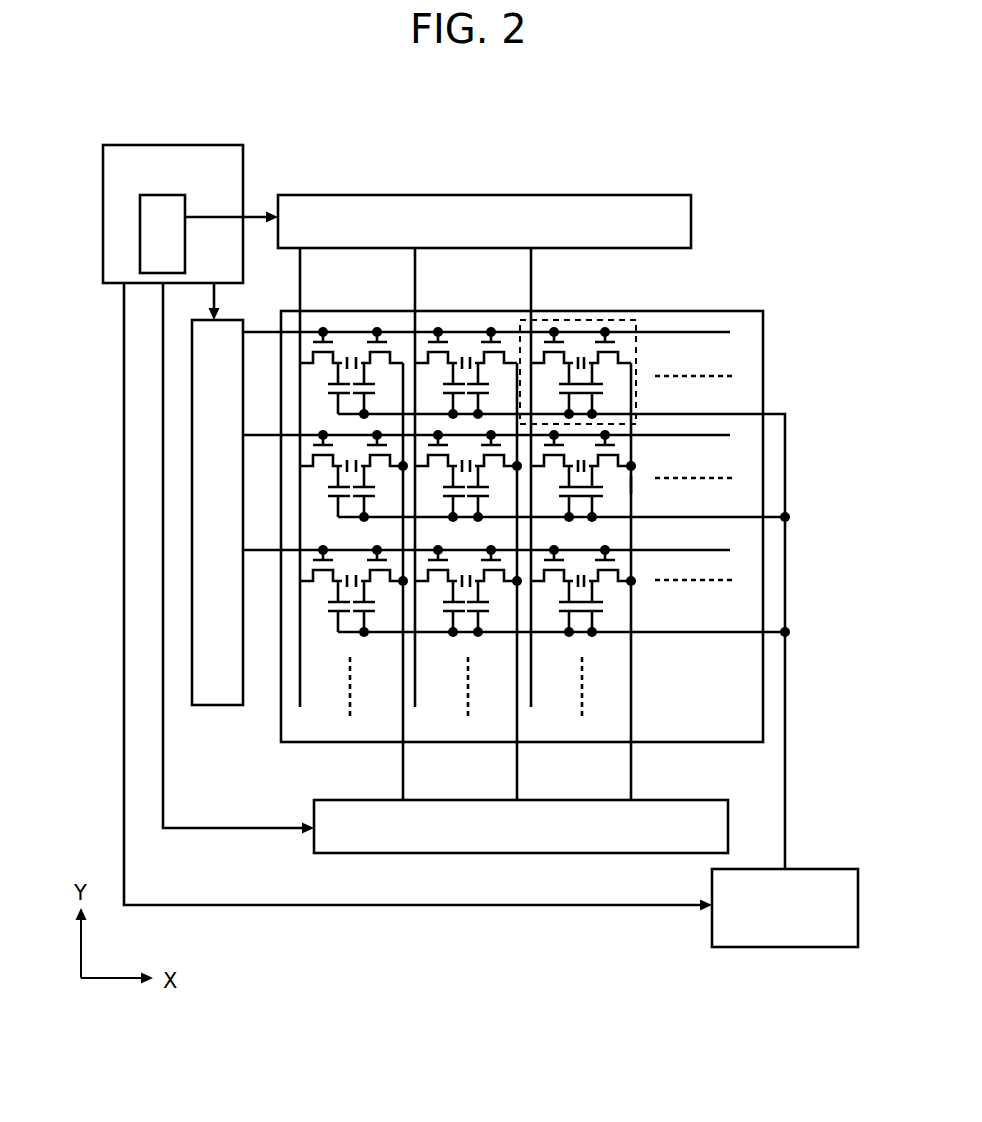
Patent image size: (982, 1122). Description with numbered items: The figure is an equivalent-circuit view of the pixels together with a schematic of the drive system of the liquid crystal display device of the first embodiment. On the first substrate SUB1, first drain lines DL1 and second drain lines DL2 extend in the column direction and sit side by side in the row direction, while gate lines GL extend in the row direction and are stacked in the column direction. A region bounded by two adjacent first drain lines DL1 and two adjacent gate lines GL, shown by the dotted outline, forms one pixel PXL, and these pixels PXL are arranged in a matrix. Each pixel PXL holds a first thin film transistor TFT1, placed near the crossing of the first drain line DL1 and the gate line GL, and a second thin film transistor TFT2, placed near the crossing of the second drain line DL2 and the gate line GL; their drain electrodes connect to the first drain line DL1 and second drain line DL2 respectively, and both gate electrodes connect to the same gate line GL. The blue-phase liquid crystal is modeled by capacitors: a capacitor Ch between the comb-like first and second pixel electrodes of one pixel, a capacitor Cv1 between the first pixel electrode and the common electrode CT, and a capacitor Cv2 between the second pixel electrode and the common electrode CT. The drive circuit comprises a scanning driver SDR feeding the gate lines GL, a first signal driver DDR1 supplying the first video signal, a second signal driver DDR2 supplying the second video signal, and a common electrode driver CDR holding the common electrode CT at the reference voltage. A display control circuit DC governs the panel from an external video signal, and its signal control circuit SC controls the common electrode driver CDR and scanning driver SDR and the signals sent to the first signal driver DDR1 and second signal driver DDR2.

The display control circuit DC is at (240, 163).
The signal control circuit SC is at (163, 196).
The first signal driver DDR1 is at (692, 221).
The scanning driver SDR is at (216, 697).
The second signal driver DDR2 is at (500, 856).
The common electrode driver CDR is at (712, 933).
The first substrate SUB1 is at (763, 331).
The gate line GL is at (720, 330).
The first drain line DL1 is at (533, 289).
The second drain line DL2 is at (633, 781).
The common electrode CT is at (672, 633).
The first thin film transistor TFT1 is at (568, 345).
The second thin film transistor TFT2 is at (620, 354).
The pixel PXL is at (637, 386).
The capacitor Cv1 is at (556, 476).
The capacitor Cv2 is at (608, 476).
The capacitor Ch is at (621, 485).